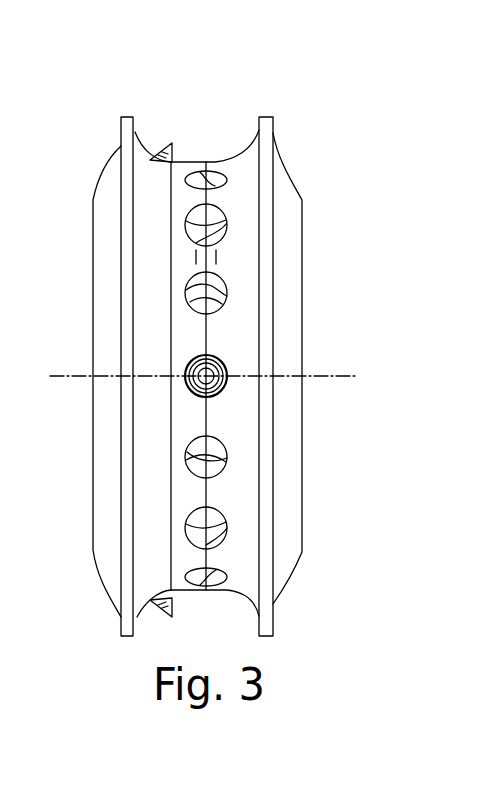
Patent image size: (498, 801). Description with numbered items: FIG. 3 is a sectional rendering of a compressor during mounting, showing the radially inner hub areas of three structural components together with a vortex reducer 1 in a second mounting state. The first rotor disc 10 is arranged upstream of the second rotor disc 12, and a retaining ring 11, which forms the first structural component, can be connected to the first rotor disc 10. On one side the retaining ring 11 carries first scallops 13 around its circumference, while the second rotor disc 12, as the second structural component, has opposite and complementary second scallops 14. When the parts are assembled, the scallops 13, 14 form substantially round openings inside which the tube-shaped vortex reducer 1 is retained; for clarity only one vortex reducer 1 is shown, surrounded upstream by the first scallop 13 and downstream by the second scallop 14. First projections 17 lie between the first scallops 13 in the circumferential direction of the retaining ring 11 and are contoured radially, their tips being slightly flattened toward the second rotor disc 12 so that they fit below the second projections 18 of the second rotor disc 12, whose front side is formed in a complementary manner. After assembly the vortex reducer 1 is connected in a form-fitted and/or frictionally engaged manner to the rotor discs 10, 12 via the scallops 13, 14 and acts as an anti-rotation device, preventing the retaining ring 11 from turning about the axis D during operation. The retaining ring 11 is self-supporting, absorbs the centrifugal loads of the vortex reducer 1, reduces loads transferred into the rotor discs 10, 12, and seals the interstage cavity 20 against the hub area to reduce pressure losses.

The vortex reducer 1 is at (227, 381).
The first rotor disc 10 is at (141, 127).
The retaining ring 11 is at (183, 160).
The second rotor disc 12 is at (273, 112).
The first scallop 13 is at (197, 299).
The second scallop 14 is at (219, 294).
The first projection 17 is at (197, 257).
The second projection 18 is at (217, 257).
The interstage cavity 20 is at (223, 152).
The axis D is at (345, 377).